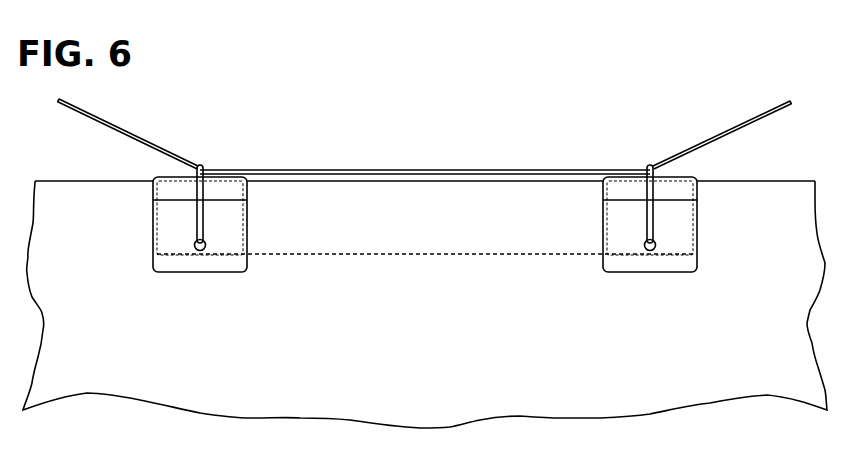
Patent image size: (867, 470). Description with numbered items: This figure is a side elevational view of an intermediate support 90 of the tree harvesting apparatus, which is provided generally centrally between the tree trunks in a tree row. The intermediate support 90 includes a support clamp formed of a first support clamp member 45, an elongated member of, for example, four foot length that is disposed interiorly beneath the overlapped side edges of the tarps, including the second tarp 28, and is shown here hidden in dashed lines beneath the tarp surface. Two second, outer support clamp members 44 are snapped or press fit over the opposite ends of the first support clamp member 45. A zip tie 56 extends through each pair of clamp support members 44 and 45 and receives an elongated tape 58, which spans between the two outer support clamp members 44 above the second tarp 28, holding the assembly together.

The second tarp 28 is at (373, 400).
The second outer support clamp member 44 is at (228, 195).
The first support clamp member 45 is at (417, 256).
The zip tie 56 is at (200, 223).
The elongated tape 58 is at (358, 168).
The intermediate support 90 is at (425, 168).